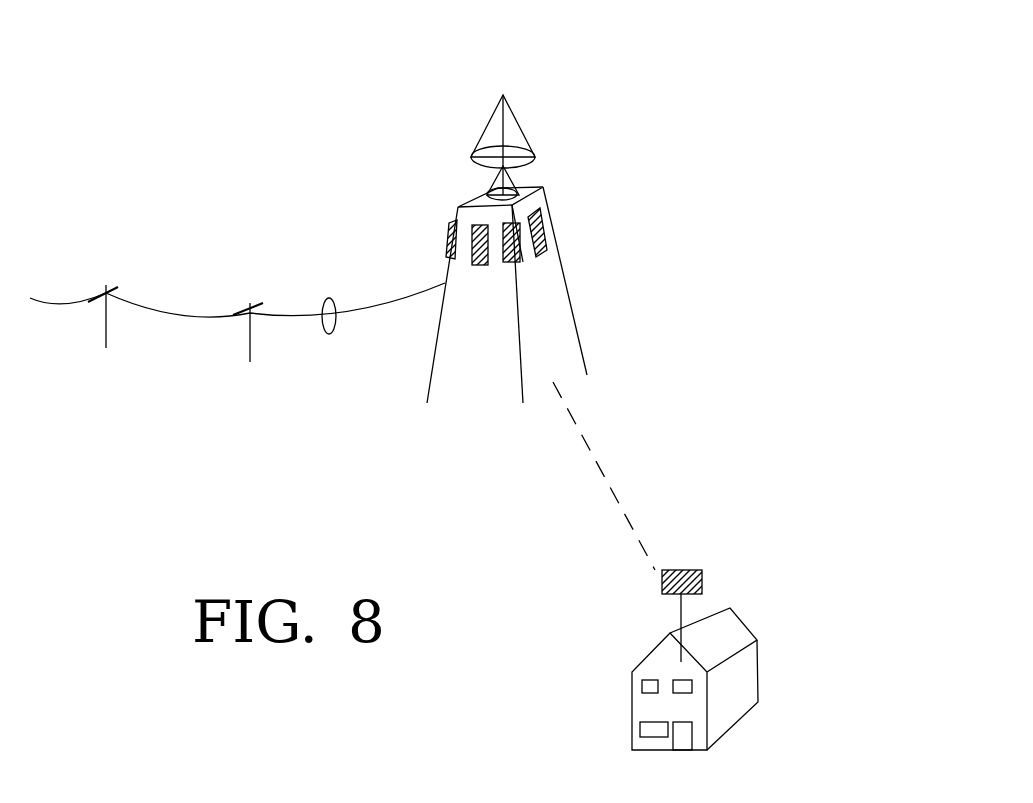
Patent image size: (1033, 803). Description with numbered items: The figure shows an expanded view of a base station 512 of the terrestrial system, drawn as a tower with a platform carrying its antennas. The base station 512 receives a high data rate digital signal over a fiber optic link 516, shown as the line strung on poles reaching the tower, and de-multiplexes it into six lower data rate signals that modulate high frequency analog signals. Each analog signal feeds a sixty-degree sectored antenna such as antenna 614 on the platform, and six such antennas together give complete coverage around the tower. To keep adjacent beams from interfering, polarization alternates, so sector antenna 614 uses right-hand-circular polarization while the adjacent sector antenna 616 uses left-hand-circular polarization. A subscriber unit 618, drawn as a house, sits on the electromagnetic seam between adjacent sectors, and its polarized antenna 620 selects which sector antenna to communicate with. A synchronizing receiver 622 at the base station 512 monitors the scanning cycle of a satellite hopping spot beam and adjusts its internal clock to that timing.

The base station 512 is at (578, 318).
The fiber optic link 516 is at (326, 338).
The sectored antenna 614 is at (547, 196).
The adjacent sector antenna 616 is at (547, 253).
The subscriber unit 618 is at (758, 618).
The polarized antenna 620 is at (682, 570).
The synchronizing receiver 622 is at (539, 109).